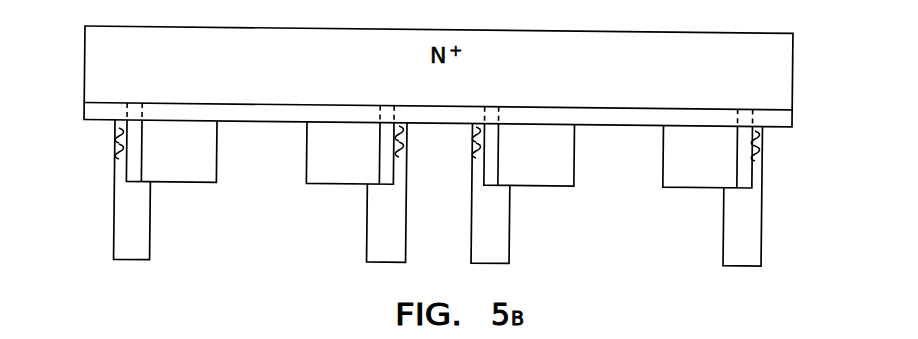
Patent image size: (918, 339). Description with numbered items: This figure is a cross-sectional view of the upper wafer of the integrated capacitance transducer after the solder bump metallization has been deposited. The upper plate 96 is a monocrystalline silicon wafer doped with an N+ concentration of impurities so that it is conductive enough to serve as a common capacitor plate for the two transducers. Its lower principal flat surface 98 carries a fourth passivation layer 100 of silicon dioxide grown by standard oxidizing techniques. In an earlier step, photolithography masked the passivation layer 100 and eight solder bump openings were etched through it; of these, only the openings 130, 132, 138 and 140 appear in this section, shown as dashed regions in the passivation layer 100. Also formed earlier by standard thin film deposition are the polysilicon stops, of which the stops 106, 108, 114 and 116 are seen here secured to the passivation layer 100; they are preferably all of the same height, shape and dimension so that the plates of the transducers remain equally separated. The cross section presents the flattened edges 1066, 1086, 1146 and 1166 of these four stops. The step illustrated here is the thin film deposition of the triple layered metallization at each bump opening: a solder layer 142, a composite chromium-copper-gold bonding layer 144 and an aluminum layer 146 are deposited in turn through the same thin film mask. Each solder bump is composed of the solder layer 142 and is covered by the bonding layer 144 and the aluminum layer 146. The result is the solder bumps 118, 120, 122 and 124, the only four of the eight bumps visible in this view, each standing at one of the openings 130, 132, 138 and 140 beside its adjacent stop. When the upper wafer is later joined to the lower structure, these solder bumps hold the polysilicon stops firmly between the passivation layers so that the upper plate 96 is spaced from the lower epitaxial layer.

The upper plate 96 is at (293, 66).
The lower principal flat surface 98 is at (598, 109).
The fourth passivation layer 100 is at (247, 115).
The polysilicon stop 106 is at (209, 167).
The polysilicon stop 108 is at (328, 177).
The polysilicon stop 114 is at (563, 180).
The polysilicon stop 116 is at (672, 162).
The flattened edge 1066 is at (138, 167).
The flattened edge 1086 is at (386, 168).
The flattened edge 1146 is at (495, 172).
The flattened edge 1166 is at (743, 173).
The solder bump 118 is at (161, 250).
The solder bump 120 is at (361, 251).
The solder bump 122 is at (525, 254).
The solder bump 124 is at (711, 253).
The opening 130 is at (143, 116).
The opening 132 is at (386, 118).
The opening 138 is at (497, 121).
The opening 140 is at (742, 122).
The solder layer 142 is at (125, 217).
The chromium-copper-gold bonding layer 144 is at (118, 147).
The aluminum layer 146 is at (118, 129).